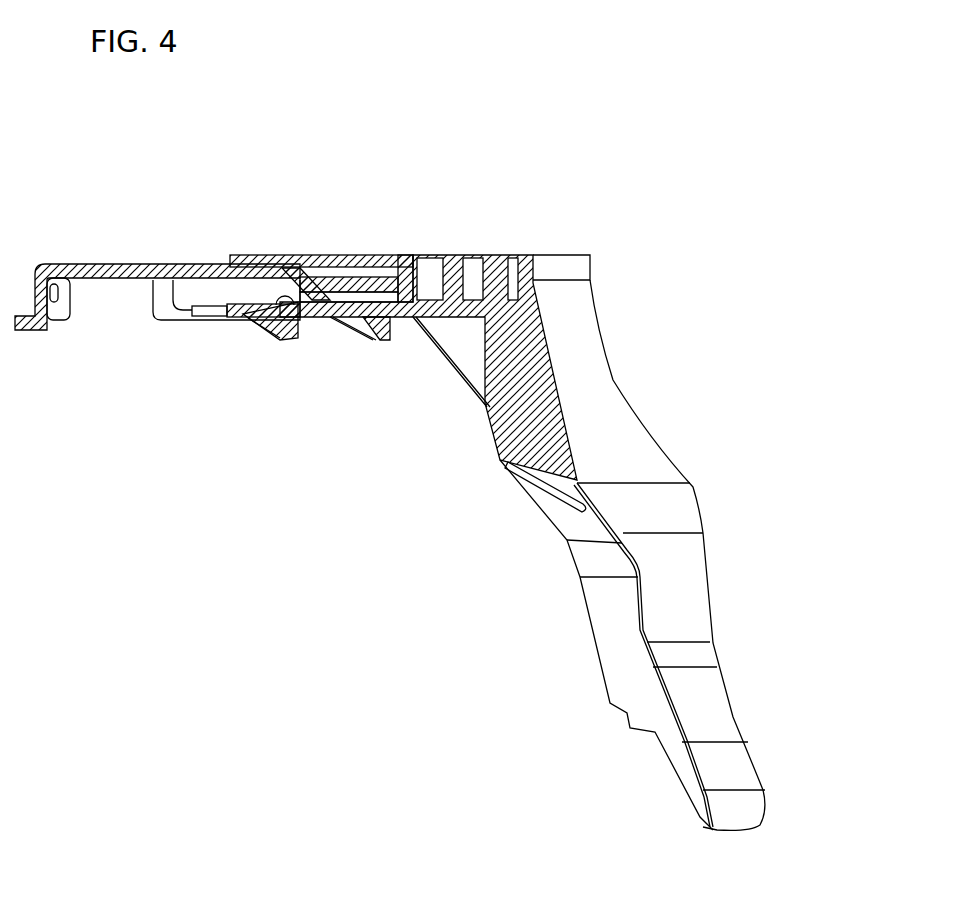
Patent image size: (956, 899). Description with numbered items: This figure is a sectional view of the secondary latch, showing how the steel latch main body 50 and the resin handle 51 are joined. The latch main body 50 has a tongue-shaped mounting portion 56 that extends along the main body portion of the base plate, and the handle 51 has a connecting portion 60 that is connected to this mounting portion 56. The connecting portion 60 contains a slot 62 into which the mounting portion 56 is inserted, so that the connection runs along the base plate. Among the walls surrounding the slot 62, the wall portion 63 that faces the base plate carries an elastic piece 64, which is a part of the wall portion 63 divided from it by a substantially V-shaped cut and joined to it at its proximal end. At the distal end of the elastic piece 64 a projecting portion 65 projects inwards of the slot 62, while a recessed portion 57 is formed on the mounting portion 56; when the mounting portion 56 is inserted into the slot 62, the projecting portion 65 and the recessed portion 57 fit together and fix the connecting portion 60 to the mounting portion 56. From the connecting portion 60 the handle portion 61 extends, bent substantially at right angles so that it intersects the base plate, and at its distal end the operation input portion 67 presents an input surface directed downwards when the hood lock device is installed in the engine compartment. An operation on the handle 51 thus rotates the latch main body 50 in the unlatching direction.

The latch main body 50 is at (92, 248).
The handle 51 is at (690, 457).
The mounting portion 56 is at (345, 277).
The recessed portion 57 is at (384, 263).
The connecting portion 60 is at (453, 257).
The handle portion 61 is at (697, 547).
The slot 62 is at (273, 320).
The wall portion 63 is at (275, 255).
The elastic piece 64 is at (370, 280).
The projecting portion 65 is at (390, 340).
The operation input portion 67 is at (752, 780).